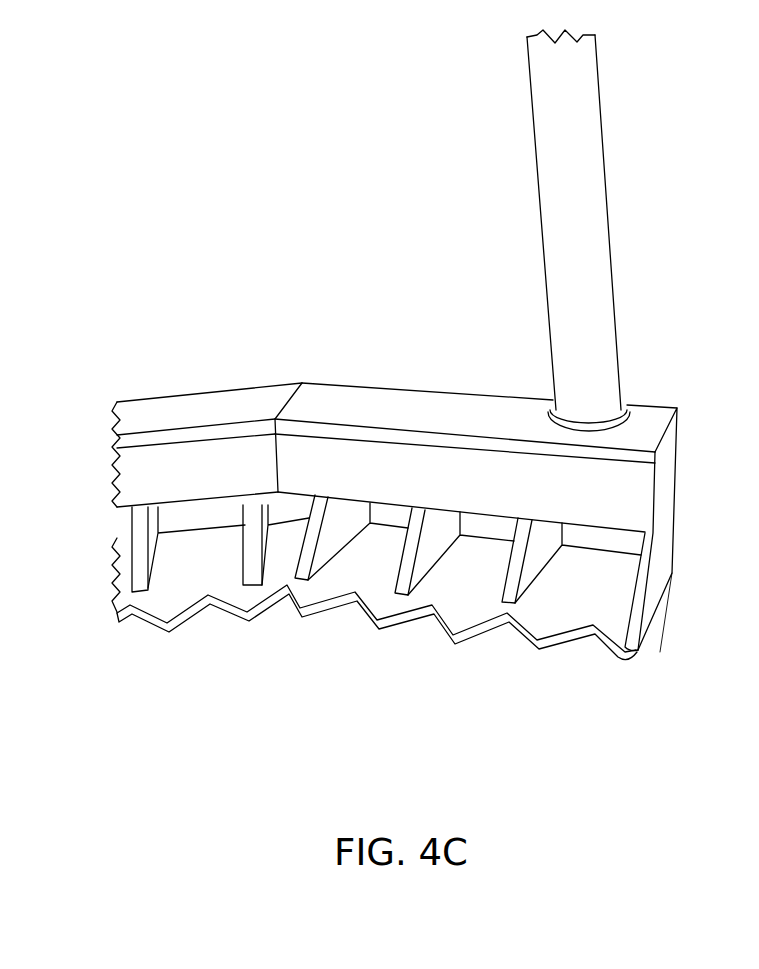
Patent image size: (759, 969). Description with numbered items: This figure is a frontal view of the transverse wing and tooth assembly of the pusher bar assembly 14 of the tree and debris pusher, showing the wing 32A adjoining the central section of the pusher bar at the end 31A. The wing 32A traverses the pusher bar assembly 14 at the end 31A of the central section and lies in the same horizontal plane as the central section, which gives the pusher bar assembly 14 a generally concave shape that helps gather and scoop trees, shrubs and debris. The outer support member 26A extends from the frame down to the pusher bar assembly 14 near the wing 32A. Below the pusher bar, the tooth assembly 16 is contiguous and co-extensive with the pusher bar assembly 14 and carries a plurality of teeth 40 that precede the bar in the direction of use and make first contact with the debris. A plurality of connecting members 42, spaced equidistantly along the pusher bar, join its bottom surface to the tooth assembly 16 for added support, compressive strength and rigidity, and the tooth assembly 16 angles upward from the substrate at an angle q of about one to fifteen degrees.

The outer support member 26A is at (538, 190).
The end of the central section 31A is at (288, 383).
The wing 32A is at (397, 412).
The pusher bar assembly 14 is at (655, 402).
The connecting member 42 is at (253, 505).
The tooth 40 is at (347, 614).
The tooth assembly 16 is at (564, 650).
The angle q is at (648, 617).